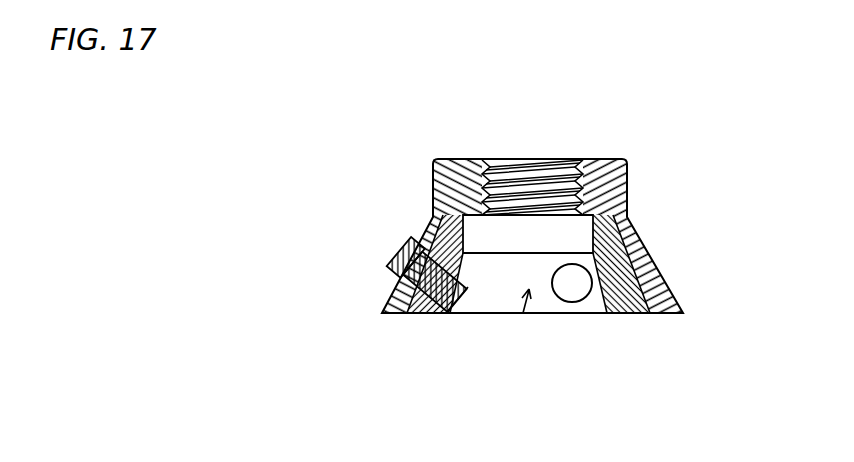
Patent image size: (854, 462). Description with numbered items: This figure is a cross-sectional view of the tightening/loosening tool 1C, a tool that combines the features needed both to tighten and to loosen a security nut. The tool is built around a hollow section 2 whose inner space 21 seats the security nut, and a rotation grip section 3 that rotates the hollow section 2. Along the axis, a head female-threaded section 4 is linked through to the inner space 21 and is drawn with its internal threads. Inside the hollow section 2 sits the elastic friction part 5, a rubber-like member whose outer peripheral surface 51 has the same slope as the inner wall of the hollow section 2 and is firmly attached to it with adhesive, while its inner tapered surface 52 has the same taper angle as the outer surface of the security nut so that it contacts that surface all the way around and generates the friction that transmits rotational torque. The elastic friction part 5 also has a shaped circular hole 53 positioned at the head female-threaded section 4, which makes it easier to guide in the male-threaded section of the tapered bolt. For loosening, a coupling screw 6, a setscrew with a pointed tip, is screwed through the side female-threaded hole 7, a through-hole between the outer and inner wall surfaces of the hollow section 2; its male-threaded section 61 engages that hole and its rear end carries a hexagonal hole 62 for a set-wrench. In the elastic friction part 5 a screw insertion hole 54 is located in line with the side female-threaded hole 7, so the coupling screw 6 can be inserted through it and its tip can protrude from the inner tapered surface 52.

The tightening/loosening tool 1C is at (367, 128).
The hollow section 2 is at (651, 243).
The rotation grip section 3 is at (608, 160).
The head female-threaded section 4 is at (513, 158).
The elastic friction part 5 is at (653, 298).
The coupling screw 6 is at (407, 250).
The side female-threaded hole 7 is at (572, 302).
The inner space 21 is at (523, 313).
The outer peripheral surface 51 is at (663, 275).
The inner tapered surface 52 is at (615, 285).
The shaped circular hole 53 is at (466, 230).
The screw insertion hole 54 is at (452, 300).
The male-threaded section 61 is at (393, 282).
The hexagonal hole 62 is at (395, 258).